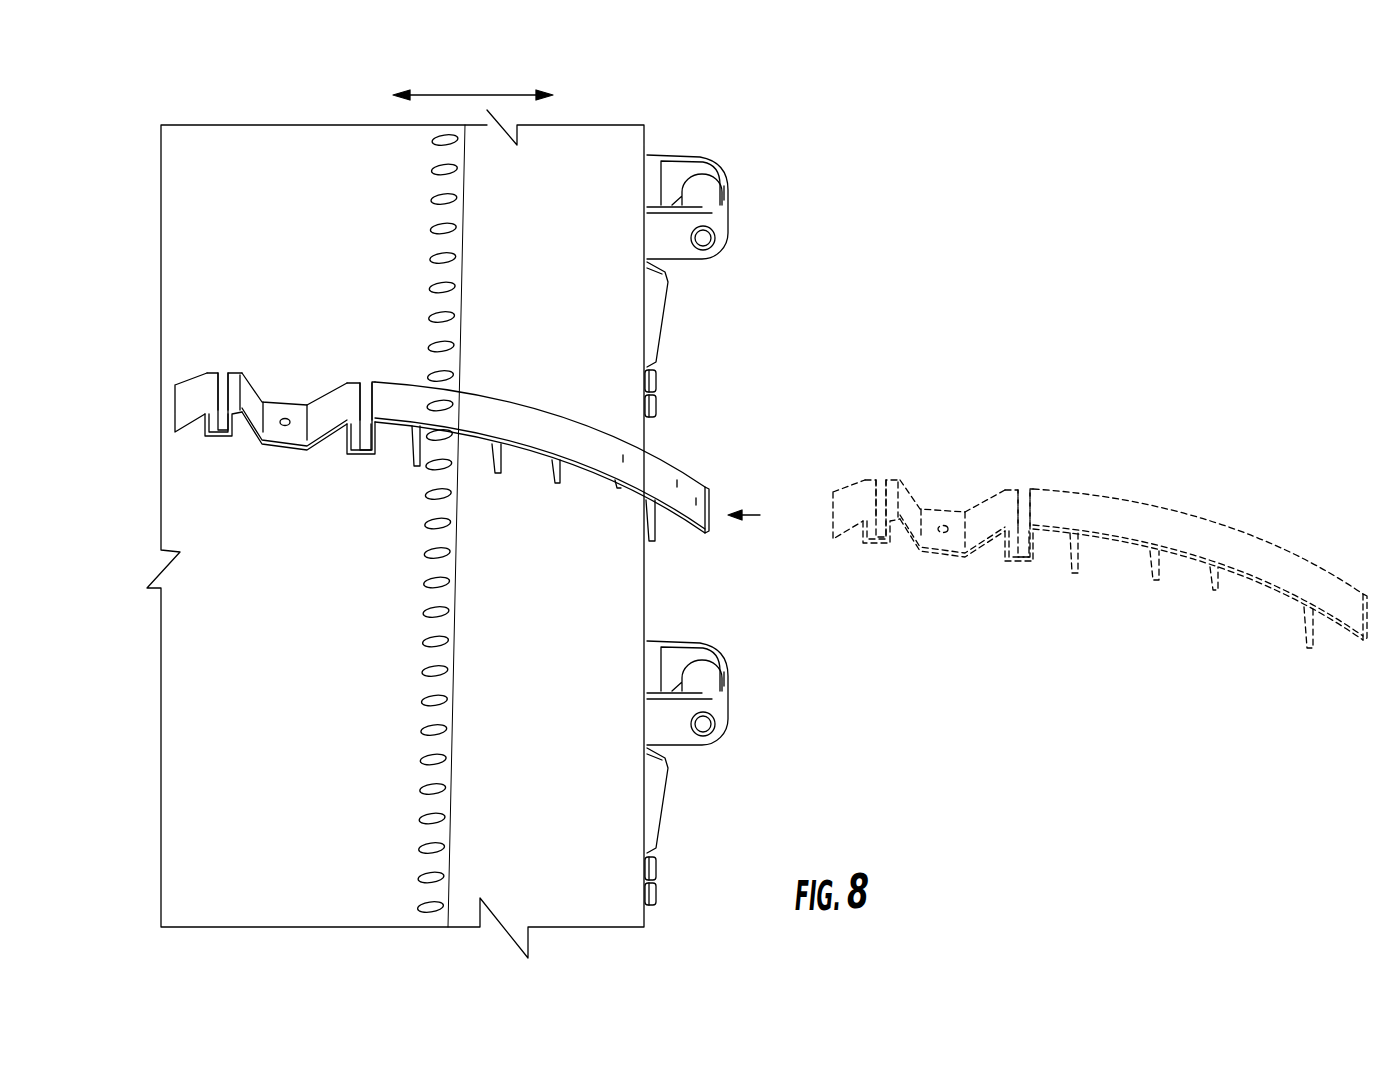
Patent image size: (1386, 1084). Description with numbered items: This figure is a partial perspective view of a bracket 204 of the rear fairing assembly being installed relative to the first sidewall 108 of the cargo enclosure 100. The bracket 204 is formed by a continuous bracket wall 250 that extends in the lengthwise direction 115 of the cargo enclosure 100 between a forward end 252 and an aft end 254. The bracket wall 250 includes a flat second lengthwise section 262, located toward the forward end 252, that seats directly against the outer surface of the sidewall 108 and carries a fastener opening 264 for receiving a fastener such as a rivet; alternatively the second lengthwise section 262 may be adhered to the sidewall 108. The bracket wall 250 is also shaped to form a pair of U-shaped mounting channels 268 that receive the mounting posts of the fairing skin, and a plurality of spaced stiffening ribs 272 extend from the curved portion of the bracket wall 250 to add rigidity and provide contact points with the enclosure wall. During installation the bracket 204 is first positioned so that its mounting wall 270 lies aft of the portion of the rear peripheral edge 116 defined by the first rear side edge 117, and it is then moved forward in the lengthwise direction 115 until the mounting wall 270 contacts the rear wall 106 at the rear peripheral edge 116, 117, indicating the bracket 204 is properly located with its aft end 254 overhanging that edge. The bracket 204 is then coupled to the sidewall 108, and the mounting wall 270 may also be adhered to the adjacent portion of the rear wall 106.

The cargo enclosure 100 is at (245, 112).
The rear wall 106 is at (647, 610).
The first sidewall 108 is at (185, 268).
The lengthwise direction 115 is at (458, 95).
The rear peripheral edge 116 is at (699, 620).
The first rear side edge 117 is at (650, 437).
The bracket 204 is at (388, 338).
The bracket wall 250 is at (515, 405).
The forward end 252 is at (173, 400).
The aft end 254 is at (710, 500).
The second lengthwise section 262 is at (307, 458).
The fastener opening 264 is at (288, 419).
The mounting channel 268 is at (224, 360).
The mounting wall 270 is at (658, 523).
The stiffening rib 272 is at (413, 453).